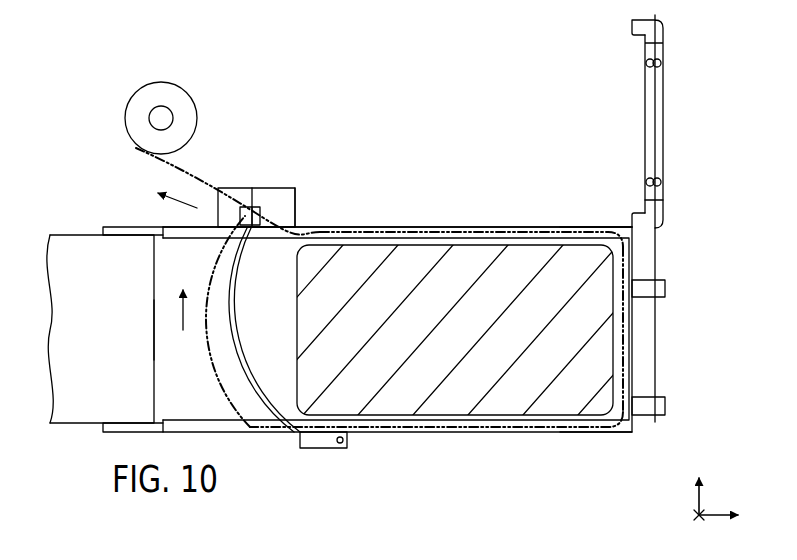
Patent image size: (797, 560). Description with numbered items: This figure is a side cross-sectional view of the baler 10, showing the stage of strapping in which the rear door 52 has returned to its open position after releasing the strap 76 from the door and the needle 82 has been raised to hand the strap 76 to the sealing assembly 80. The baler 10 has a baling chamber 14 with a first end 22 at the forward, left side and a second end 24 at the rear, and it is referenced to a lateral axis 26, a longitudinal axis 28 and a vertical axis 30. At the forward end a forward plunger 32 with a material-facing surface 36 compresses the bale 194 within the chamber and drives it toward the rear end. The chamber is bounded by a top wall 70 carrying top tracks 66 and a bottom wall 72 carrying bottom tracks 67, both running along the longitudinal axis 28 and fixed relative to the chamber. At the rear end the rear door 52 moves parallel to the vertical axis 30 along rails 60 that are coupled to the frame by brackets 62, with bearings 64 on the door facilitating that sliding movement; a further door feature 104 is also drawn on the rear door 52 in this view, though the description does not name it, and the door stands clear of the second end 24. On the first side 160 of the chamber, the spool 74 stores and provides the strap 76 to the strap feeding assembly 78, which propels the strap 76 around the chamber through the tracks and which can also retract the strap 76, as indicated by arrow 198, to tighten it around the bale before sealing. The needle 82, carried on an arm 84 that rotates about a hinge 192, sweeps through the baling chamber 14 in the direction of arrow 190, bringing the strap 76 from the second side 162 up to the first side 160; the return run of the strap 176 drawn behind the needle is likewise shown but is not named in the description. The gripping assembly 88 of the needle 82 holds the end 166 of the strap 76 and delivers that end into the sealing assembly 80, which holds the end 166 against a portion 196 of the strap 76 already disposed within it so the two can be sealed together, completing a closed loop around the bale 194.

The baler 10 is at (424, 150).
The baling chamber 14 is at (288, 320).
The first end 22 is at (96, 222).
The second end 24 is at (668, 252).
The lateral axis 26 is at (695, 515).
The longitudinal axis 28 is at (712, 513).
The vertical axis 30 is at (697, 500).
The forward plunger 32 is at (62, 252).
The material-facing surface 36 is at (155, 328).
The rear door 52 is at (667, 146).
The rails 60 is at (663, 16).
The brackets 62 is at (667, 289).
The bearings 64 is at (662, 61).
The top tracks 66 is at (440, 232).
The bottom tracks 67 is at (547, 430).
The top wall 70 is at (512, 228).
The bottom wall 72 is at (580, 433).
The spool 74 is at (127, 100).
The strap 76 is at (162, 174).
The strap feeding assembly 78 is at (226, 188).
The sealing assembly 80 is at (296, 225).
The needle 82 is at (240, 330).
The arm 84 is at (321, 450).
The gripping assembly 88 is at (258, 223).
The lower cross member 104 is at (663, 200).
The first side 160 is at (572, 216).
The second side 162 is at (570, 446).
The end 166 is at (270, 215).
The strap return portion 176 is at (207, 370).
The arrow 190 is at (178, 314).
The hinge 192 is at (342, 446).
The bale 194 is at (612, 329).
The portion 196 is at (253, 212).
The arrow 198 is at (182, 205).